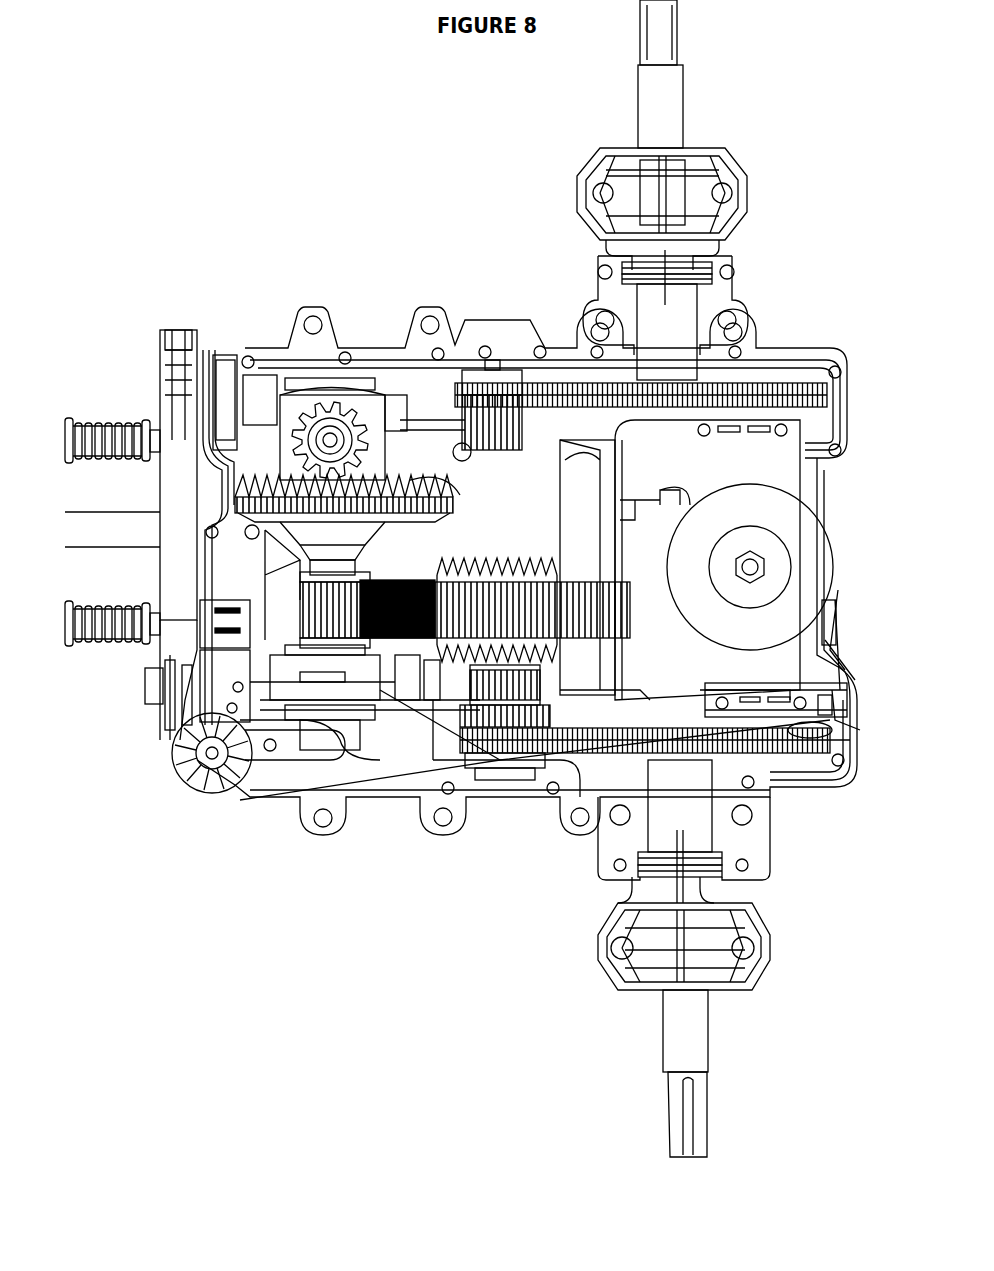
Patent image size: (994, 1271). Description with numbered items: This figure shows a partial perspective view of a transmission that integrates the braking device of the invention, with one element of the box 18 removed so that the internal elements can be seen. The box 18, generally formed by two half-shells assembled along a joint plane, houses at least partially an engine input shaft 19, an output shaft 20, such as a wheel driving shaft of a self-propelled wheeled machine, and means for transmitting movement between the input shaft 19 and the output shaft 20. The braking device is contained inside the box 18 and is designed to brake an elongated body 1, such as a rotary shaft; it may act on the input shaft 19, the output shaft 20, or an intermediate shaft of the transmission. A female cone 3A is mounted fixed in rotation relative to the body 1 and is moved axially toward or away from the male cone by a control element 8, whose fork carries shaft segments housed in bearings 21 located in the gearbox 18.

The elongated body 1 is at (340, 700).
The female cone 3A is at (300, 710).
The control element 8 is at (405, 695).
The box 18 is at (855, 418).
The engine input shaft 19 is at (312, 410).
The output shaft 20 is at (672, 303).
The bearings 21 is at (433, 700).